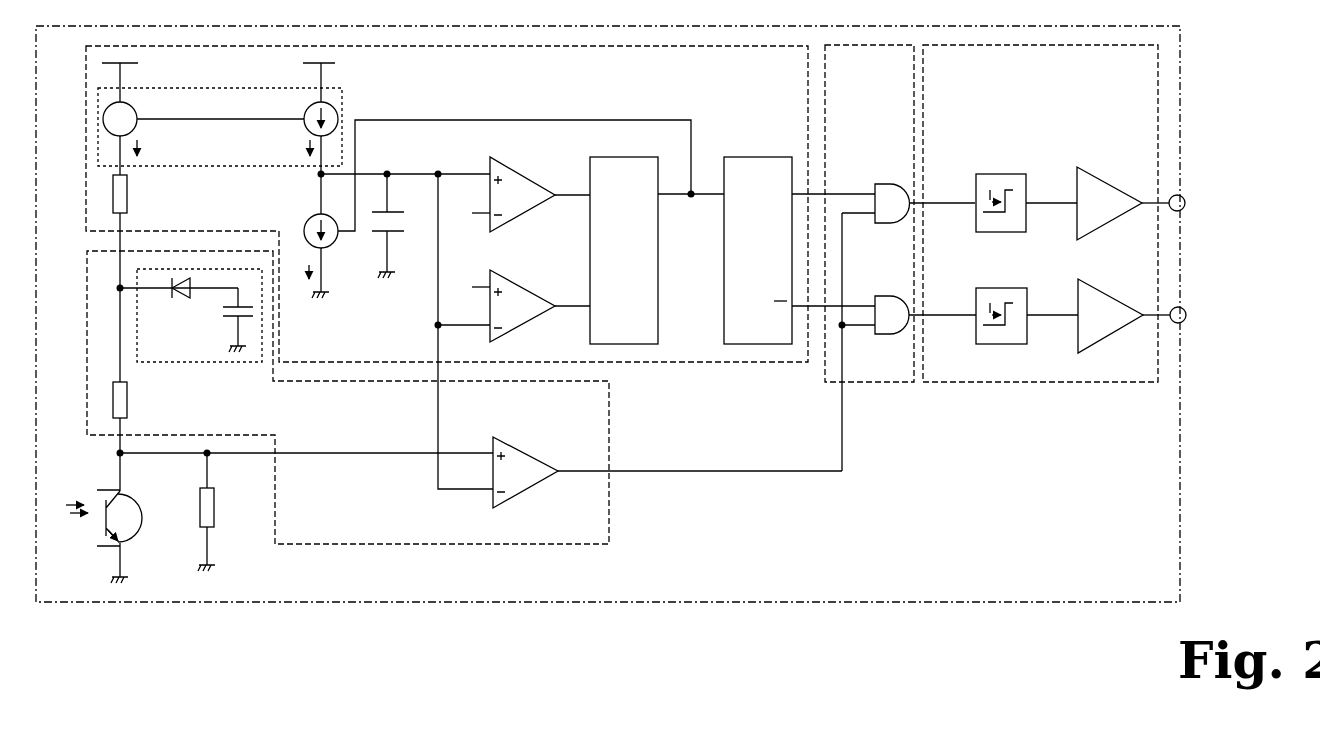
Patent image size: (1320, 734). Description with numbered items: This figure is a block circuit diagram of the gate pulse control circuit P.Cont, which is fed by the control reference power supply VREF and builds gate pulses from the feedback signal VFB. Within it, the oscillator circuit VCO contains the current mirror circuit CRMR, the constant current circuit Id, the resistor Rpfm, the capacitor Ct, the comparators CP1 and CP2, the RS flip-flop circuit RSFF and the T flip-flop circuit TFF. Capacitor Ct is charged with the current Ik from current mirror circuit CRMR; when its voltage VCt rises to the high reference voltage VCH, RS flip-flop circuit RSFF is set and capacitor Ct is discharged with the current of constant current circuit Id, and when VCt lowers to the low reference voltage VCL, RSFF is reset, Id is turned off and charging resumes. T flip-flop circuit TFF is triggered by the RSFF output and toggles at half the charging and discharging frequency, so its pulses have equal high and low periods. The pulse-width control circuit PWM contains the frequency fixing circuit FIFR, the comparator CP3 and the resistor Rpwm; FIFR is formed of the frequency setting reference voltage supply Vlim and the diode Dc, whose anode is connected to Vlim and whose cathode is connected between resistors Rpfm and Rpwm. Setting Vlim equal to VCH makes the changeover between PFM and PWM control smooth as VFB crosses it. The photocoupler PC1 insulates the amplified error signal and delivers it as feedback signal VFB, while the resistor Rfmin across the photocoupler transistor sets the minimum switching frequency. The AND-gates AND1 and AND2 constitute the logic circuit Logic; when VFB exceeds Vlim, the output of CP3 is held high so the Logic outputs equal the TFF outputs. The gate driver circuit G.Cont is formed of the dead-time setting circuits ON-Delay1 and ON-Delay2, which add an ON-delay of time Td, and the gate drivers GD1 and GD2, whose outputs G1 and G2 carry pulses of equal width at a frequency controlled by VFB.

The gate pulse control circuit P.Cont is at (585, 603).
The oscillator circuit VCO is at (665, 363).
The pulse-width control circuit PWM is at (609, 544).
The logic circuit Logic is at (862, 383).
The gate driver circuit G.Cont is at (978, 383).
The current mirror circuit CRMR is at (342, 101).
The control reference power supply VREF is at (243, 79).
The charging current Ik is at (223, 153).
The resistor Rpfm is at (145, 212).
The constant current circuit Id is at (489, 209).
The voltage of capacitor Ct VCt is at (407, 316).
The capacitor Ct is at (393, 226).
The high reference voltage VCH is at (465, 203).
The low reference voltage VCL is at (465, 277).
The comparator CP1 is at (540, 191).
The comparator CP2 is at (540, 302).
The comparator CP3 is at (667, 465).
The RS flip-flop circuit RSFF is at (655, 239).
The T flip-flop circuit TFF is at (799, 239).
The AND-gate AND1 is at (908, 317).
The AND-gate AND2 is at (908, 304).
The dead-time setting circuit ON-Delay1 is at (1010, 191).
The dead-time setting circuit ON-Delay2 is at (1009, 303).
The gate driver GD1 is at (1123, 194).
The gate driver GD2 is at (1124, 308).
The gate driver output G1 is at (1202, 205).
The gate driver output G2 is at (1203, 317).
The frequency fixing circuit FIFR is at (215, 364).
The diode Dc is at (178, 299).
The frequency setting reference voltage supply Vlim is at (219, 320).
The resistor Rpwm is at (149, 370).
The feedback signal VFB is at (282, 456).
The resistor Rfmin is at (233, 512).
The photocoupler PC1 is at (97, 518).